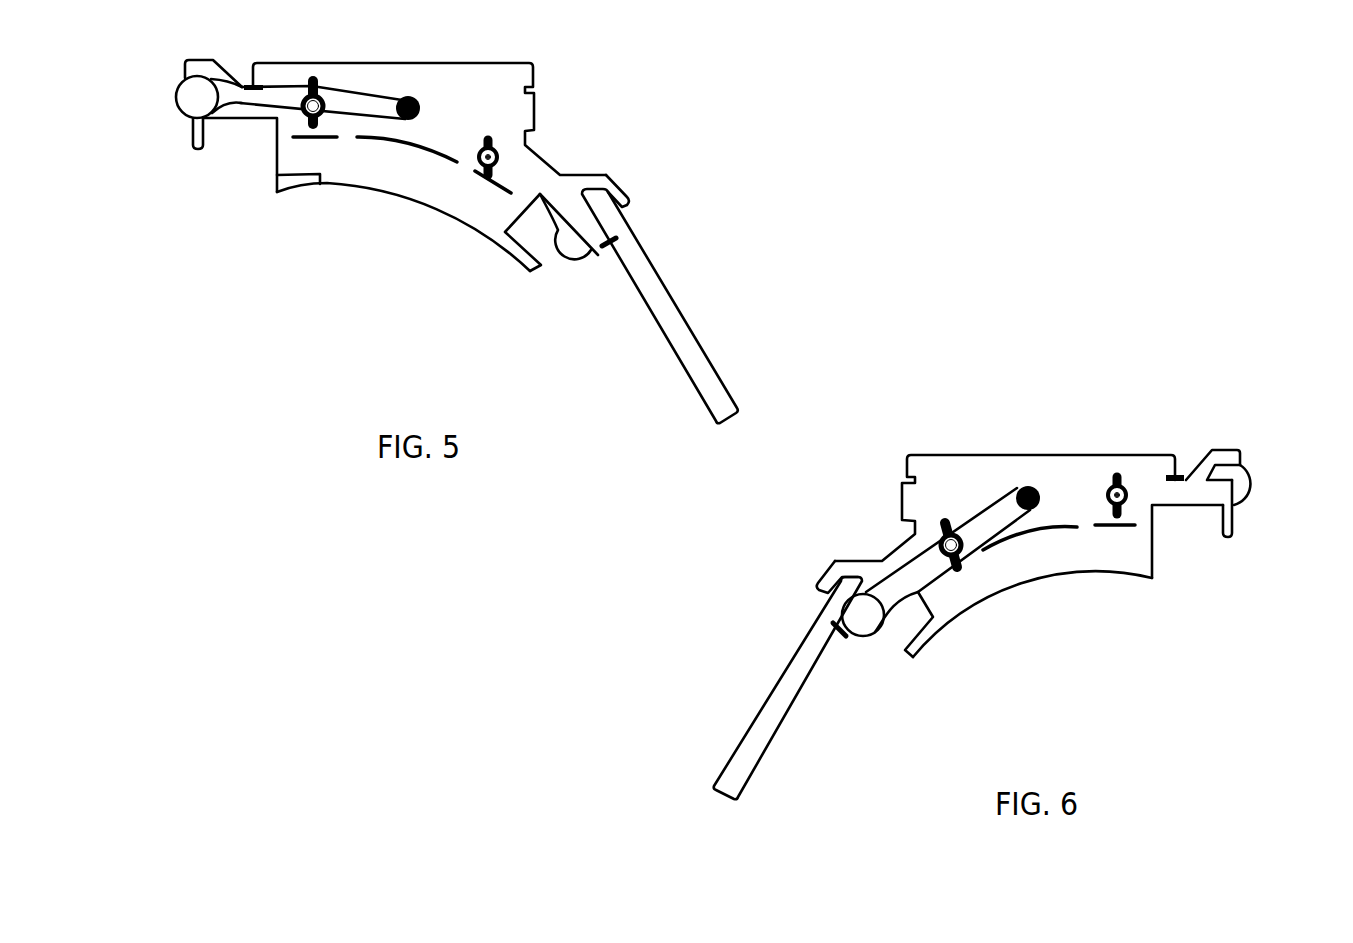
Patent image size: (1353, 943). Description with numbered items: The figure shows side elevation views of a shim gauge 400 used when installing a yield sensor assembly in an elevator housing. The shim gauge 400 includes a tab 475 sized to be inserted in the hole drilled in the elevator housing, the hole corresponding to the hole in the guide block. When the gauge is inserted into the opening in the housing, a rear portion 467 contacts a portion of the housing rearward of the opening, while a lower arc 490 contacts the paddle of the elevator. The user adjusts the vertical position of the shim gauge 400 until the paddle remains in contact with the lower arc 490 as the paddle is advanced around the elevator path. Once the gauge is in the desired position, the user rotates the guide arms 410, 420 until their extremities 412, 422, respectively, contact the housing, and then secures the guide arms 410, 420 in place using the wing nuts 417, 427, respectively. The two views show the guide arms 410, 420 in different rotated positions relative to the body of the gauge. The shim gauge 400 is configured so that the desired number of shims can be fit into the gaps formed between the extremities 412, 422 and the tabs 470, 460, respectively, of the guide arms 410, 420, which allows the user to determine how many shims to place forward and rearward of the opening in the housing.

In FIG. 5, the shim gauge 400 is at (622, 113).
In FIG. 6, the shim gauge 400 is at (1130, 355).
In FIG. 5, the guide arm 410 is at (360, 107).
In FIG. 5, the extremity 412 is at (175, 98).
In FIG. 6, the extremity 412 is at (1252, 482).
In FIG. 5, the wing nut 417 is at (314, 82).
In FIG. 6, the guide arm 420 is at (980, 530).
In FIG. 5, the extremity 422 is at (580, 253).
In FIG. 6, the extremity 422 is at (862, 637).
In FIG. 6, the wing nut 427 is at (952, 525).
In FIG. 5, the tab 460 is at (626, 205).
In FIG. 6, the tab 460 is at (828, 576).
In FIG. 5, the rear portion 467 is at (653, 337).
In FIG. 6, the rear portion 467 is at (737, 746).
In FIG. 6, the tab 470 is at (1222, 450).
In FIG. 5, the tab 475 is at (197, 150).
In FIG. 6, the tab 475 is at (1228, 540).
In FIG. 5, the lower arc 490 is at (363, 195).